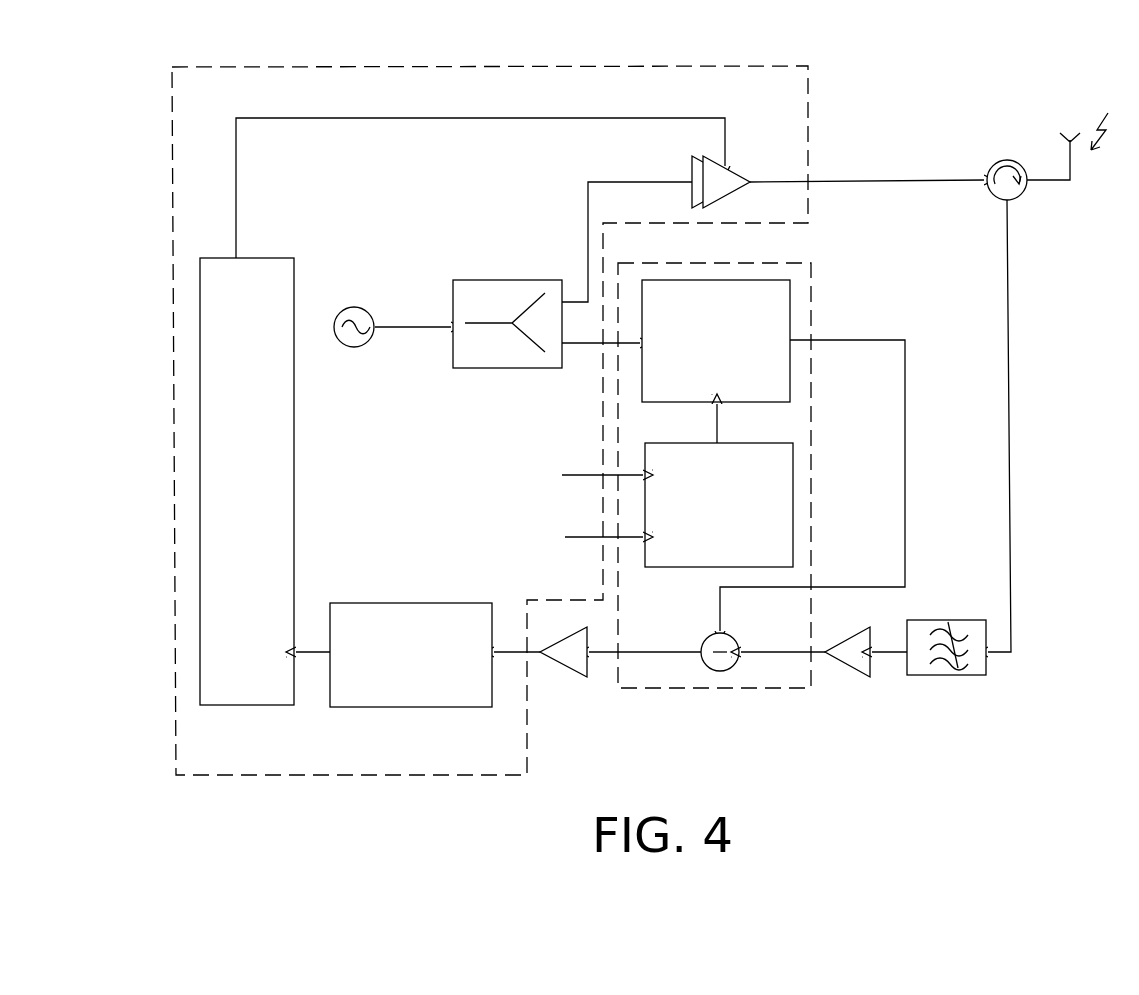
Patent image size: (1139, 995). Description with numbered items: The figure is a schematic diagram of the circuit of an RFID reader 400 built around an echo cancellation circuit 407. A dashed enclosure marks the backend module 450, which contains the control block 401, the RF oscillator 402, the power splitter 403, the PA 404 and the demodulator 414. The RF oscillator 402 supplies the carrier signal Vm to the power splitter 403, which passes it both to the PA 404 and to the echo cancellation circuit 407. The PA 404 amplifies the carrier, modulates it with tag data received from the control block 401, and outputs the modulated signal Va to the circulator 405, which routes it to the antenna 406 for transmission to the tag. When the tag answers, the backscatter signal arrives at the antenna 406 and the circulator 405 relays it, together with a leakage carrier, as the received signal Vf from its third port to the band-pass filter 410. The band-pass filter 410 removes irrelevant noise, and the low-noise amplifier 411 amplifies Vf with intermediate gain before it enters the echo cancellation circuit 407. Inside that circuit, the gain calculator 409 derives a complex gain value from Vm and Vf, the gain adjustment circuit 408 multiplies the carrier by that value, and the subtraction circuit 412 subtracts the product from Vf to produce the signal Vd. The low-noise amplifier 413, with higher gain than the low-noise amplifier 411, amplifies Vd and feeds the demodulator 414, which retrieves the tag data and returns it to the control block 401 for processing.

The RFID reader 400 is at (1100, 736).
The control block 401 is at (243, 705).
The RF oscillator 402 is at (358, 305).
The power splitter 403 is at (512, 280).
The PA 404 is at (740, 170).
The circulator 405 is at (996, 162).
The antenna 406 is at (1064, 130).
The echo cancellation circuit 407 is at (803, 262).
The gain adjustment circuit 408 is at (790, 378).
The gain calculator 409 is at (793, 505).
The band-pass filter 410 is at (946, 677).
The low-noise amplifier 411 is at (845, 672).
The subtraction circuit 412 is at (720, 671).
The low-noise amplifier 413 is at (558, 677).
The demodulator 414 is at (410, 707).
The backend module 450 is at (170, 278).